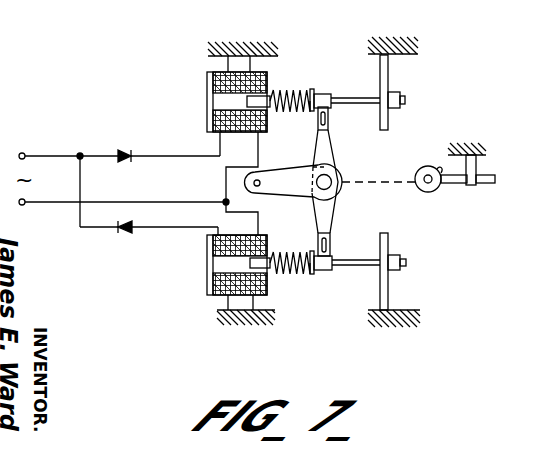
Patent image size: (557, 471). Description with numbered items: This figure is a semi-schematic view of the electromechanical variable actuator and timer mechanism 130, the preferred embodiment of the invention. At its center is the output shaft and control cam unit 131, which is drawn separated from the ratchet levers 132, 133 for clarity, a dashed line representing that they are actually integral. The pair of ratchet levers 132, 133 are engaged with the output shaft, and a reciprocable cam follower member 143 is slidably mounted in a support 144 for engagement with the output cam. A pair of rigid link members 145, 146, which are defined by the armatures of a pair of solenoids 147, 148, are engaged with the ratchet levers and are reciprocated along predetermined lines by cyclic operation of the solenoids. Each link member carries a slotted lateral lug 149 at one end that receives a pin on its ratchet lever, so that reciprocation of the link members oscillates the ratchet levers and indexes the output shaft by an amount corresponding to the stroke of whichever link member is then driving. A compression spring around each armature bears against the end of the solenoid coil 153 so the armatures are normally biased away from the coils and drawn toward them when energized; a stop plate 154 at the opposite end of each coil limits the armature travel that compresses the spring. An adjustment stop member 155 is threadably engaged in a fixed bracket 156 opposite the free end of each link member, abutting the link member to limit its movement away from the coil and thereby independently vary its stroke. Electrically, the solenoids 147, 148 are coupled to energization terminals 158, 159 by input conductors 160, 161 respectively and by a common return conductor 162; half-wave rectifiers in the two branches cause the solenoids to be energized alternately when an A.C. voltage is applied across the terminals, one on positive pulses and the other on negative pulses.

The electromechanical variable actuator and timer mechanism 130 is at (457, 107).
The output shaft and control cam unit 131 is at (428, 143).
The ratchet lever 132 is at (339, 202).
The ratchet lever 133 is at (334, 148).
The reciprocable cam follower member 143 is at (490, 187).
The support 144 is at (477, 167).
The rigid link member 145 is at (318, 276).
The rigid link member 146 is at (315, 89).
The solenoid 147 is at (217, 296).
The solenoid 148 is at (212, 74).
The lateral lug 149 is at (329, 113).
The coil 153 is at (293, 274).
The stop plate 154 is at (207, 110).
The adjustment stop member 155 is at (331, 95).
The fixed bracket 156 is at (388, 72).
The energization terminal 158 is at (22, 152).
The energization terminal 159 is at (22, 206).
The input conductor 160 is at (170, 158).
The input conductor 161 is at (150, 230).
The common return conductor 162 is at (157, 200).